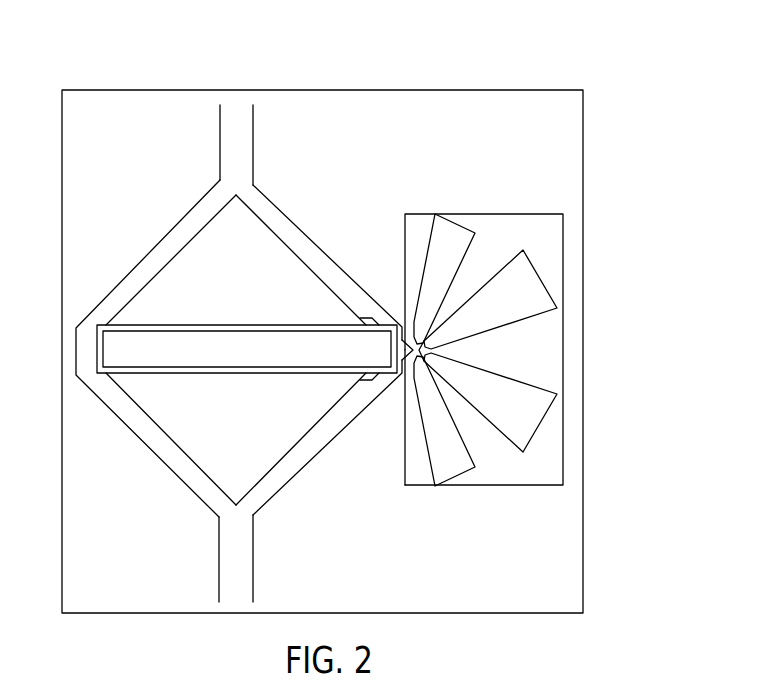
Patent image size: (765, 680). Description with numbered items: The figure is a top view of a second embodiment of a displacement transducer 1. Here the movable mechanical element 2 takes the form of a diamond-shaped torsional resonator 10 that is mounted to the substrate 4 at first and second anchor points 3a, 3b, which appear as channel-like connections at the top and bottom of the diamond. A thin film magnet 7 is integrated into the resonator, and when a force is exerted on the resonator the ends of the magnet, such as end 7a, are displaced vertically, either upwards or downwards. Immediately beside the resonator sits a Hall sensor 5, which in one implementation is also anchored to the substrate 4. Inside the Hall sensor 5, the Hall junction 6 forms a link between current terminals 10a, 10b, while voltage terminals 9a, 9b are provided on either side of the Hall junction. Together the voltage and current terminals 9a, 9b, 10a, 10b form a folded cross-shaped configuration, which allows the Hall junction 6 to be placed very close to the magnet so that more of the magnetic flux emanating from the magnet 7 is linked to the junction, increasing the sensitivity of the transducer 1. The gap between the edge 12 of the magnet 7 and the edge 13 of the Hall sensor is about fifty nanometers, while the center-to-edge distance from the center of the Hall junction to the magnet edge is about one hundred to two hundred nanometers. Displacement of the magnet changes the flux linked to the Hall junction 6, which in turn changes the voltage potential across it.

The displacement transducer 1 is at (318, 72).
The movable mechanical element 2 is at (183, 180).
The first anchor point 3a is at (272, 105).
The second anchor point 3b is at (272, 595).
The substrate 4 is at (118, 552).
The Hall sensor 5 is at (500, 185).
The Hall junction 6 is at (418, 357).
The magnet 7 is at (240, 325).
The end of the magnet 7a is at (400, 320).
The voltage terminal 9a is at (427, 240).
The voltage terminal 9b is at (542, 428).
The diamond-shaped torsional resonator 10 is at (167, 233).
The current terminal 10a is at (537, 272).
The current terminal 10b is at (450, 480).
The edge of the magnet 12 is at (400, 370).
The edge of the Hall sensor 13 is at (405, 400).